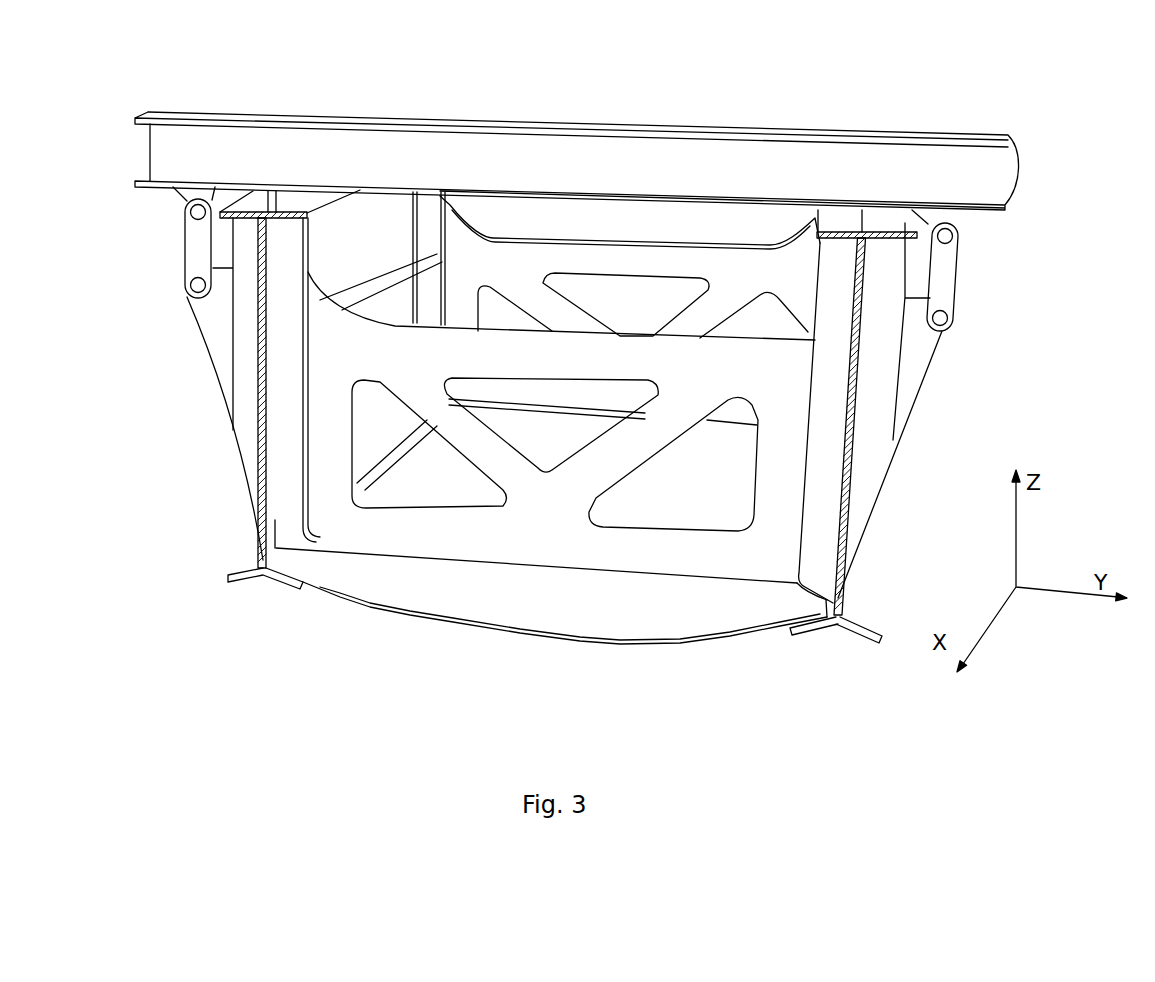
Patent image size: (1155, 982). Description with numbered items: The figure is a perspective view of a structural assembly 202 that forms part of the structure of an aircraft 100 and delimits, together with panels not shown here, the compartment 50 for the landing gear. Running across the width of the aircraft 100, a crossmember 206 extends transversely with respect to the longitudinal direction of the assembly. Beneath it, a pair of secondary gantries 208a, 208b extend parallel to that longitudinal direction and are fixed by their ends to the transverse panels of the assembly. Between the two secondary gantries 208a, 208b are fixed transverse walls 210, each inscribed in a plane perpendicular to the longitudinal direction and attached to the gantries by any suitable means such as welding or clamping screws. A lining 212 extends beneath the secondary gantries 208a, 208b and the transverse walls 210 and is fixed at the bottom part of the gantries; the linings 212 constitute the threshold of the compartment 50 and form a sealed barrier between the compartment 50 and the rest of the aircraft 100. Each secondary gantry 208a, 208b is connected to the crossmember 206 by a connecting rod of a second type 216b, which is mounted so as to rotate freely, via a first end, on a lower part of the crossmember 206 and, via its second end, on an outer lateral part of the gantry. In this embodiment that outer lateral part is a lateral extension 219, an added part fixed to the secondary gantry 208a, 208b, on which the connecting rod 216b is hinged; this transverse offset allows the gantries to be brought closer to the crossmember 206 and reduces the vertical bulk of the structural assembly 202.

The aircraft 100 is at (100, 114).
The structural assembly 202 is at (1056, 117).
The crossmember 206 is at (694, 138).
The secondary gantry 208a is at (265, 473).
The secondary gantry 208b is at (852, 457).
The transverse wall 210 is at (513, 276).
The lining 212 is at (370, 607).
The connecting rod of a second type 216b is at (942, 263).
The lateral extension 219 is at (925, 367).
The compartment 50 is at (820, 694).